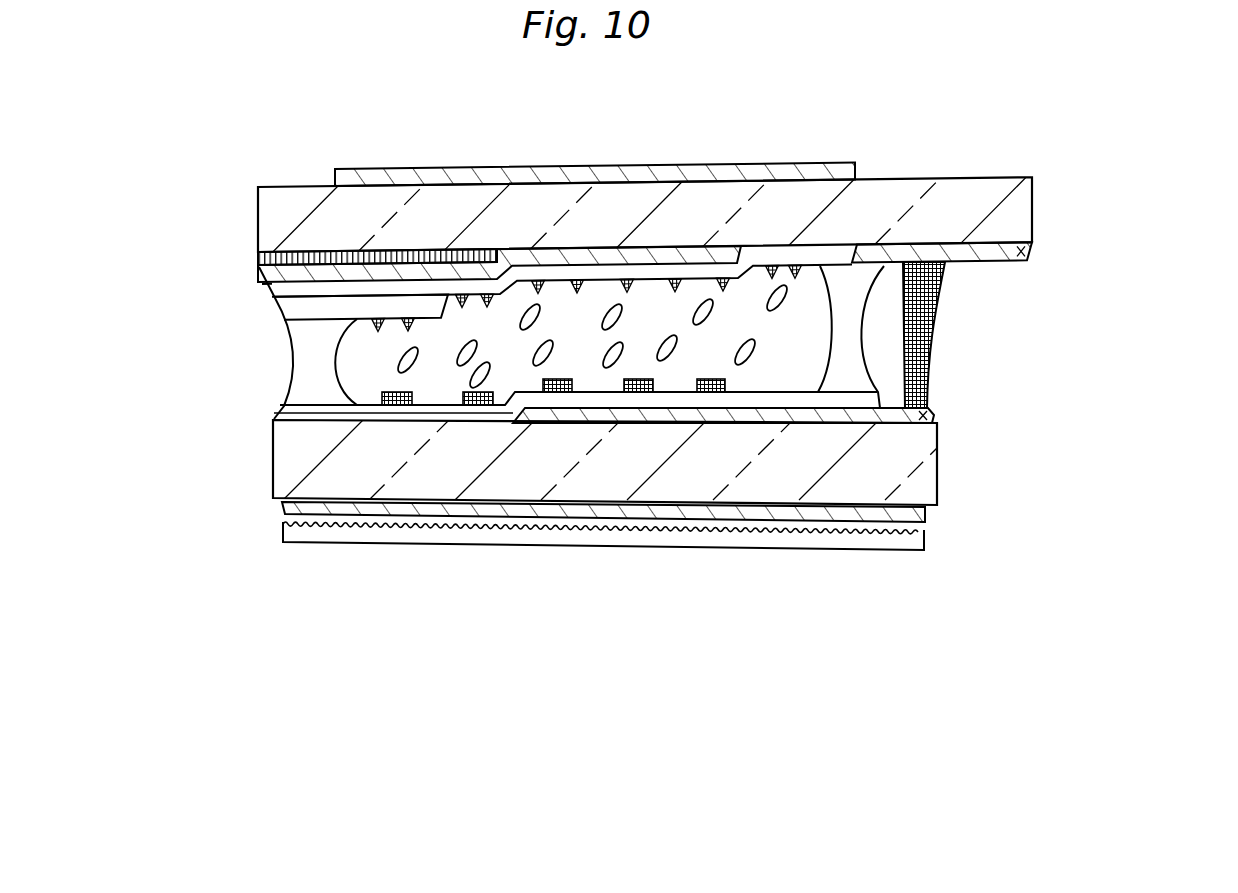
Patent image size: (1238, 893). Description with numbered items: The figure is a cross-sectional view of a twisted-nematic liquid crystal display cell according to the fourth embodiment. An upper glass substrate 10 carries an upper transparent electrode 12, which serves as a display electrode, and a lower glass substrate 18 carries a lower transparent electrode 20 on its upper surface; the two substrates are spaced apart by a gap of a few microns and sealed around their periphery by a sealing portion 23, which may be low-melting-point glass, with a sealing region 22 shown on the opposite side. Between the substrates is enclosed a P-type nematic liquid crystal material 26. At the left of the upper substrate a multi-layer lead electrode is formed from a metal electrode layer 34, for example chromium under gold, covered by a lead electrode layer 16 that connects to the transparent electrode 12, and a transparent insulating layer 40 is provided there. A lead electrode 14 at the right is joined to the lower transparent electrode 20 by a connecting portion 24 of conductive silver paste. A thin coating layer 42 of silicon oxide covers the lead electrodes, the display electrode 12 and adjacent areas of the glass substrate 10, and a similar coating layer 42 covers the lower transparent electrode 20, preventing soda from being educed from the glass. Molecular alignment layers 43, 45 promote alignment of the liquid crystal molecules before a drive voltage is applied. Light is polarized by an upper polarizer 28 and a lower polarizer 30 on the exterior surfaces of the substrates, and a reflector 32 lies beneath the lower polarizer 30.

The upper glass substrate 10 is at (1012, 188).
The upper transparent electrode 12 is at (597, 262).
The lead electrode 14 is at (1027, 258).
The lead electrode layer 16 is at (263, 273).
The lower glass substrate 18 is at (290, 462).
The lower transparent electrode 20 is at (934, 416).
The sealing portion 22 is at (300, 367).
The sealing portion 23 is at (853, 353).
The connecting portion 24 is at (935, 322).
The liquid crystal material 26 is at (777, 298).
The upper polarizer 28 is at (722, 168).
The lower polarizer 30 is at (283, 506).
The reflector 32 is at (368, 533).
The metal electrode layer 34 is at (258, 257).
The transparent insulating layer 40 is at (318, 303).
The coating layer 42 is at (273, 293).
The molecular alignment layer 43 is at (539, 286).
The molecular alignment layer 45 is at (479, 407).